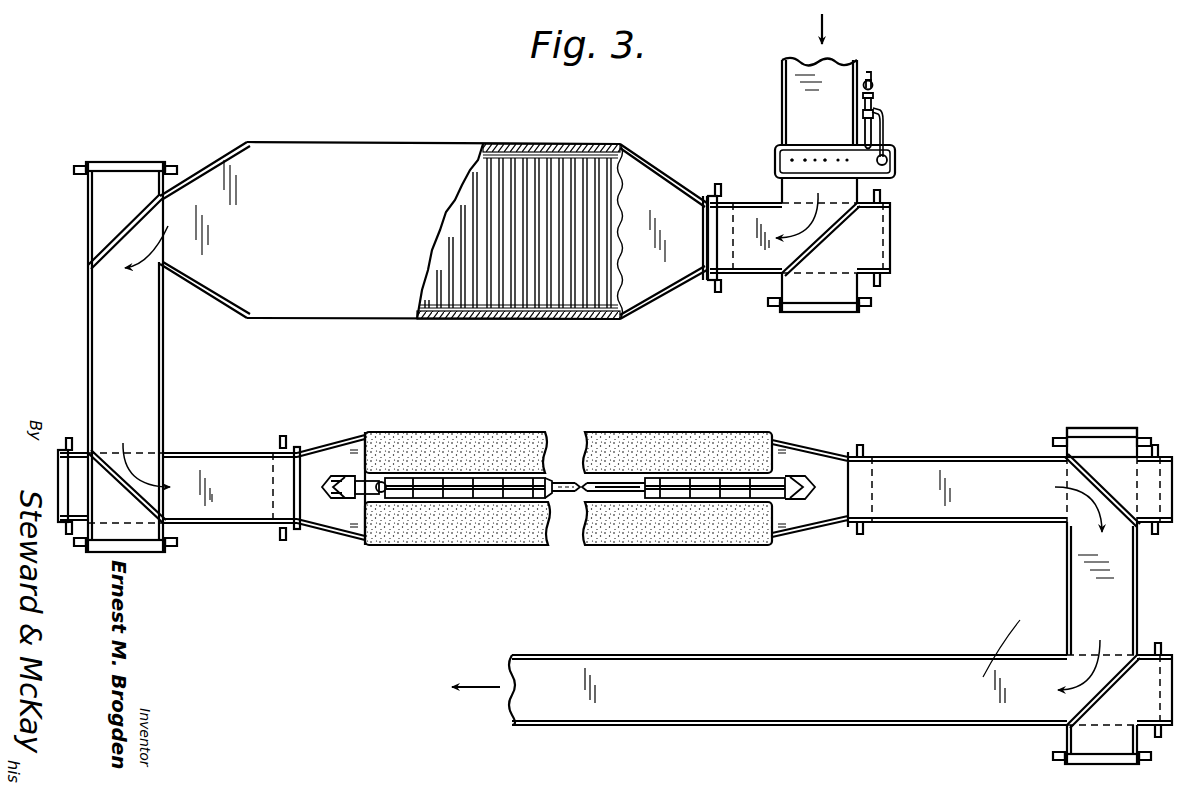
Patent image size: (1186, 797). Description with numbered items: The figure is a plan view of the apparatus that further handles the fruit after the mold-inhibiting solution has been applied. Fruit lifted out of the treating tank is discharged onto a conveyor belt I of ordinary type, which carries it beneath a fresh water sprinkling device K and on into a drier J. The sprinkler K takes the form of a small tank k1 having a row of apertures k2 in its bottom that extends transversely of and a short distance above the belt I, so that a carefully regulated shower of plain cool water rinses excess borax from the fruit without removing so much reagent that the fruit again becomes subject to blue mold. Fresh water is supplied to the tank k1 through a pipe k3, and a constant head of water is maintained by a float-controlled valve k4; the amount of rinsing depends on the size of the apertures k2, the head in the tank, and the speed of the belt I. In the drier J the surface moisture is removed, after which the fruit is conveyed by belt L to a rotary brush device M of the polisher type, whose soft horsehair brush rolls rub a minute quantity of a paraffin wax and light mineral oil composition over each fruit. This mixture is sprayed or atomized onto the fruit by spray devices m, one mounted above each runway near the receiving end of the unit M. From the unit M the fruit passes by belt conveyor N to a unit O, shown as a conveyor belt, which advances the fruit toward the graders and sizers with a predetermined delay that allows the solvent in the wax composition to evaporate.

The conveyor belt I is at (782, 105).
The drier J is at (433, 208).
The sprinkling device K is at (856, 161).
The small tank k1 is at (775, 170).
The apertures k2 is at (826, 157).
The pipe k3 is at (876, 87).
The float-controlled valve k4 is at (885, 112).
The belt L is at (145, 397).
The rotary brush device M is at (572, 465).
The spray devices m is at (370, 500).
The belt conveyor N is at (943, 470).
The unit O is at (1085, 595).